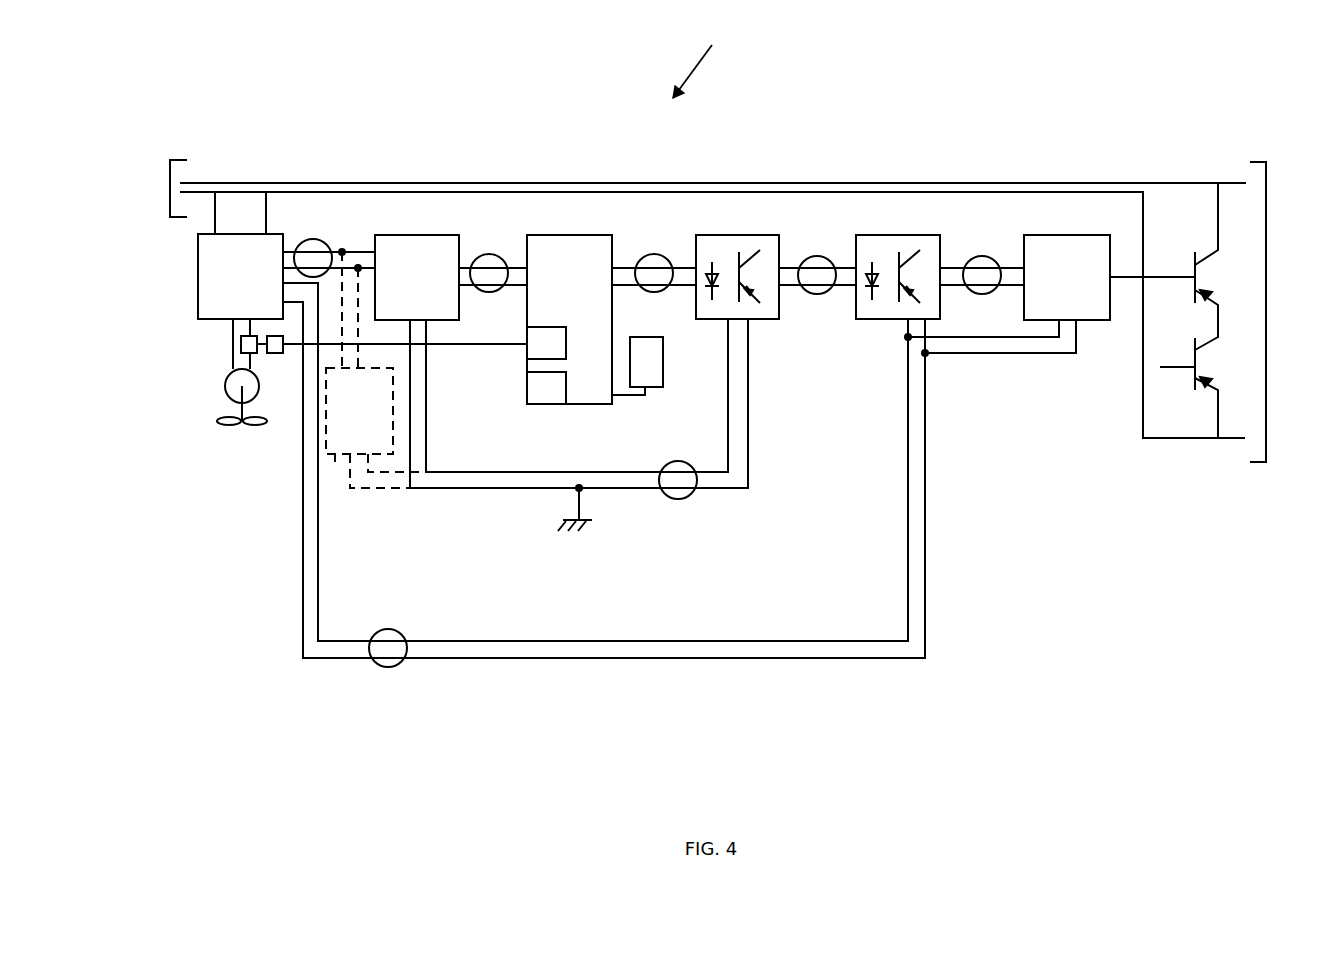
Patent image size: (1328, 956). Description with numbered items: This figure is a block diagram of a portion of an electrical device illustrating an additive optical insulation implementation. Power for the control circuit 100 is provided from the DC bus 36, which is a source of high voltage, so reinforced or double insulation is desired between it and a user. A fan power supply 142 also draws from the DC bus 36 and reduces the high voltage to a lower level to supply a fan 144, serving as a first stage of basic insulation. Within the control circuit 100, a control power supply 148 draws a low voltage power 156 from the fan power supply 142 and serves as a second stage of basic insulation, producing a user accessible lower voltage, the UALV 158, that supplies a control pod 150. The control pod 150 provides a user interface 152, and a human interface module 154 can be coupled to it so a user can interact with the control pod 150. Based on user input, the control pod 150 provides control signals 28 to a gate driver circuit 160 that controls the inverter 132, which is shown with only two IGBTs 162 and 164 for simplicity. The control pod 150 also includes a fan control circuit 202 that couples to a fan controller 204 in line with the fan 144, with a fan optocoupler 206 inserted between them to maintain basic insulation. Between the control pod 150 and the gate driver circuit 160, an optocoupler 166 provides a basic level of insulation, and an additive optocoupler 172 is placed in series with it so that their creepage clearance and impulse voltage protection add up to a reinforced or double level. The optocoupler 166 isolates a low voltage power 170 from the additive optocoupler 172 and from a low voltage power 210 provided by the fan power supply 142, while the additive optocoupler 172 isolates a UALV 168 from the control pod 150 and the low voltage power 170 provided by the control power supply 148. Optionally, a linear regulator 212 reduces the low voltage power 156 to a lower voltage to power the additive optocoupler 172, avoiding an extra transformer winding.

The DC bus 36 is at (170, 175).
The control circuit 100 is at (708, 62).
The fan power supply 142 is at (198, 282).
The fan 144 is at (225, 387).
The control power supply 148 is at (417, 235).
The control pod 150 is at (565, 235).
The user interface 152 is at (530, 390).
The human interface module 154 is at (663, 358).
The low voltage power 156 is at (313, 239).
The user accessible lower voltage (UALV) 158 is at (489, 254).
The gate driver circuit 160 is at (1070, 235).
The IGBT 162 is at (1218, 223).
The IGBT 164 is at (1210, 386).
The optocoupler 166 is at (893, 235).
The UALV 168 is at (654, 254).
The low voltage power 170 is at (817, 256).
The additive optocoupler 172 is at (740, 235).
The fan control circuit 202 is at (522, 350).
The fan controller 204 is at (257, 353).
The fan optocoupler 206 is at (275, 353).
The low voltage power 210 is at (982, 256).
The linear regulator 212 is at (335, 462).
The control signals 28 is at (1126, 279).
The inverter 132 is at (1266, 217).